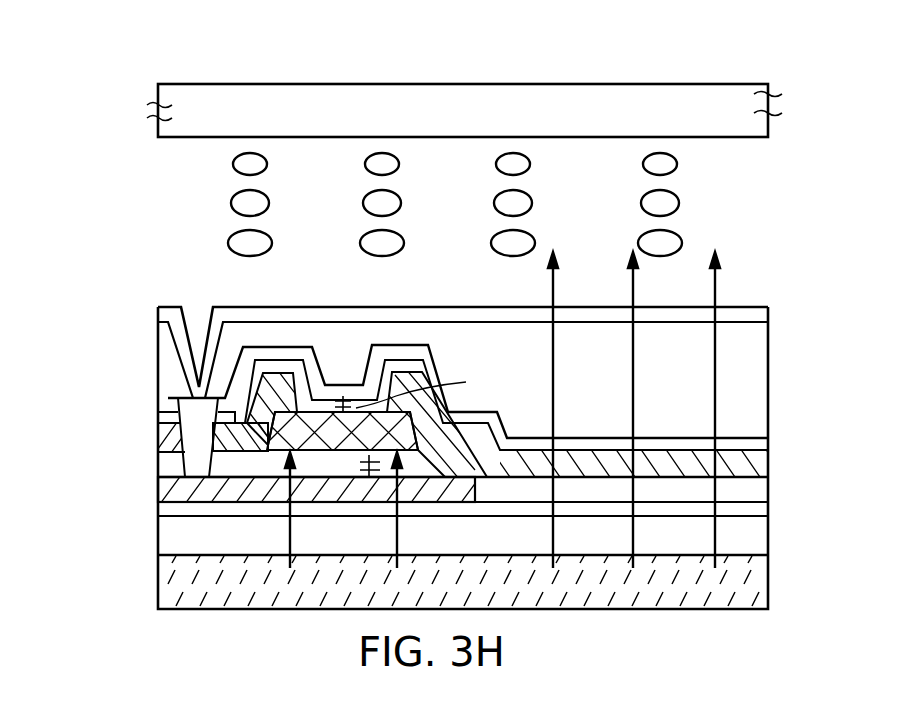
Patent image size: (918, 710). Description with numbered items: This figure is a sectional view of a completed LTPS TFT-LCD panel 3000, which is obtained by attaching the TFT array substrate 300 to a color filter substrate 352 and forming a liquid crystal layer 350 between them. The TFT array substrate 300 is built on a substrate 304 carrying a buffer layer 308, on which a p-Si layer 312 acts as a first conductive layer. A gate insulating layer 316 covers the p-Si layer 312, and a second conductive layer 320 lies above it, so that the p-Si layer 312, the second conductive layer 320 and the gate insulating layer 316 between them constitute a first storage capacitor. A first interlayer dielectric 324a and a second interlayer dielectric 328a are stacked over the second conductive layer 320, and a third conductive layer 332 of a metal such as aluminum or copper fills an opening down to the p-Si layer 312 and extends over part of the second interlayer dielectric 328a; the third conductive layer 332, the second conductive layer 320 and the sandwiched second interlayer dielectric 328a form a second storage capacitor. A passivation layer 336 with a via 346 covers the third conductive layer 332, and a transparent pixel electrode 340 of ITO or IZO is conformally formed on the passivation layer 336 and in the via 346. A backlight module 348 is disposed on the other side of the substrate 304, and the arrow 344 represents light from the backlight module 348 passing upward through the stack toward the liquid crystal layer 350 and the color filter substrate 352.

The LTPS TFT-LCD panel 3000 is at (119, 46).
The TFT array substrate 300 is at (74, 307).
The substrate 304 is at (755, 537).
The buffer layer 308 is at (755, 508).
The p-Si layer 312 is at (175, 488).
The gate insulating layer 316 is at (755, 490).
The second conductive layer 320 is at (272, 431).
The first interlayer dielectric 324a is at (755, 462).
The second interlayer dielectric 328a is at (755, 447).
The third conductive layer 332 is at (168, 405).
The passivation layer 336 is at (752, 360).
The transparent pixel electrode 340 is at (758, 315).
The arrow 344 is at (717, 285).
The via 346 is at (195, 314).
The backlight module 348 is at (755, 582).
The liquid crystal layer 350 is at (772, 150).
The color filter substrate 352 is at (782, 94).